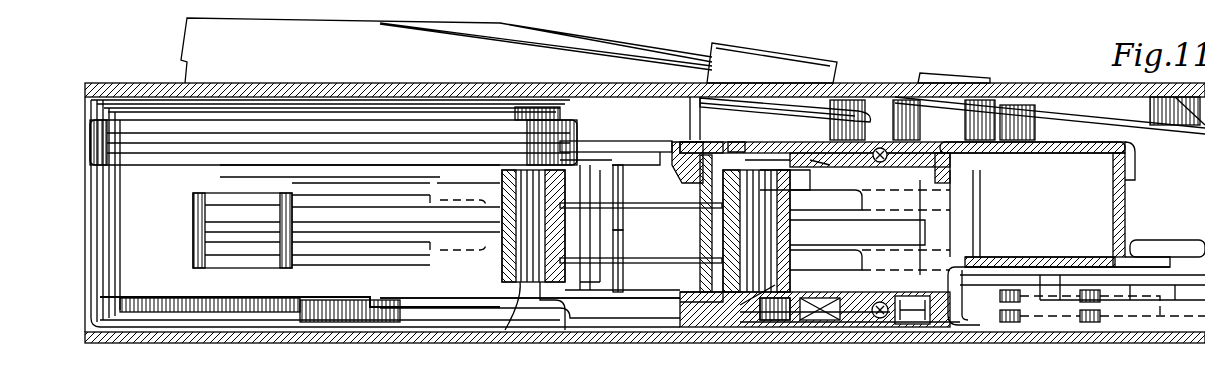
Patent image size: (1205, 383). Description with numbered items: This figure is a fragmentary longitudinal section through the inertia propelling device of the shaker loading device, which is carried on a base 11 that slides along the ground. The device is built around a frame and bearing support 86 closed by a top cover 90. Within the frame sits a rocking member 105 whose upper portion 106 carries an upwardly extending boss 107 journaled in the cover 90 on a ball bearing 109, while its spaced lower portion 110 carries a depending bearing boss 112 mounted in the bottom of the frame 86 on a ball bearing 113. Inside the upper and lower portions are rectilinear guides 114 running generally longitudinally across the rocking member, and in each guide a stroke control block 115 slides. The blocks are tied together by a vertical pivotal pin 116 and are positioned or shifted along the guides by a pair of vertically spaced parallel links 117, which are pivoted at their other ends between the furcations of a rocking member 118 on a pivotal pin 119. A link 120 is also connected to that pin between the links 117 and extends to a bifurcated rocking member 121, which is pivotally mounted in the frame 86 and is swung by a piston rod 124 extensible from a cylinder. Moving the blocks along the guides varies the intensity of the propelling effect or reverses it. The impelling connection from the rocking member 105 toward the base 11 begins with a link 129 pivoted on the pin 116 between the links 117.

The base 11 is at (250, 340).
The frame and bearing support 86 is at (572, 322).
The top cover 90 is at (1045, 140).
The rocking member 105 is at (988, 212).
The upper portion 106 is at (960, 140).
The upwardly extending boss 107 is at (848, 110).
The ball bearing 109 is at (895, 100).
The lower portion 110 is at (950, 322).
The depending bearing boss 112 is at (876, 320).
The ball bearing 113 is at (910, 326).
The rectilinear guides 114 is at (828, 160).
The stroke control block 115 is at (690, 142).
The vertical pivotal pin 116 is at (745, 170).
The parallel links 117 is at (625, 212).
The rocking member 118 is at (623, 272).
The pivotal pin 119 is at (508, 342).
The link 120 is at (545, 228).
The bifurcated rocking member 121 is at (357, 200).
The piston rod 124 is at (275, 232).
The link 129 is at (722, 232).